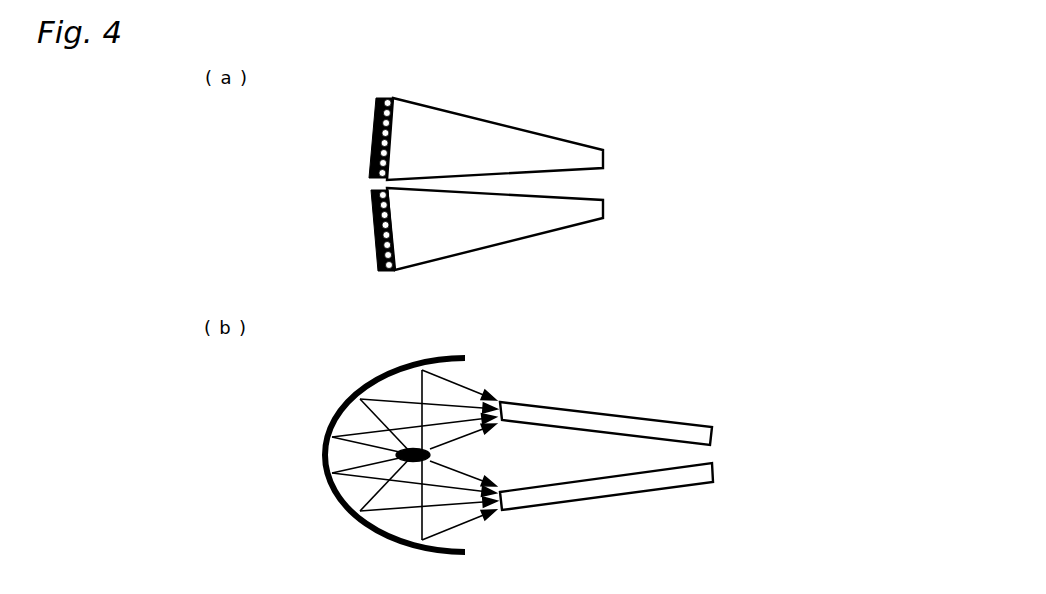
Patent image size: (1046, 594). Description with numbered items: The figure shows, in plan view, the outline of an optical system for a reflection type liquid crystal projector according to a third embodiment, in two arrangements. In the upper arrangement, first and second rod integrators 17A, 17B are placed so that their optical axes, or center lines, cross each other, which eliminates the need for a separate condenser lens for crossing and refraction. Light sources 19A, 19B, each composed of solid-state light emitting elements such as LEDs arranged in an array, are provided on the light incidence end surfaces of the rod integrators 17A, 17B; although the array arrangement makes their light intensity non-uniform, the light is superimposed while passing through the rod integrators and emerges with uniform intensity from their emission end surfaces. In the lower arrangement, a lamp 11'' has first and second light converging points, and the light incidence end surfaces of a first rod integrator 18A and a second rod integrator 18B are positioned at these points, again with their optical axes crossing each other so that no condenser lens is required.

The first rod integrator 17A is at (490, 128).
The second rod integrator 17B is at (492, 240).
The light source 19A is at (372, 122).
The light source 19B is at (373, 227).
The lamp 11'' is at (411, 447).
The first rod integrator 18A is at (602, 418).
The second rod integrator 18B is at (608, 488).